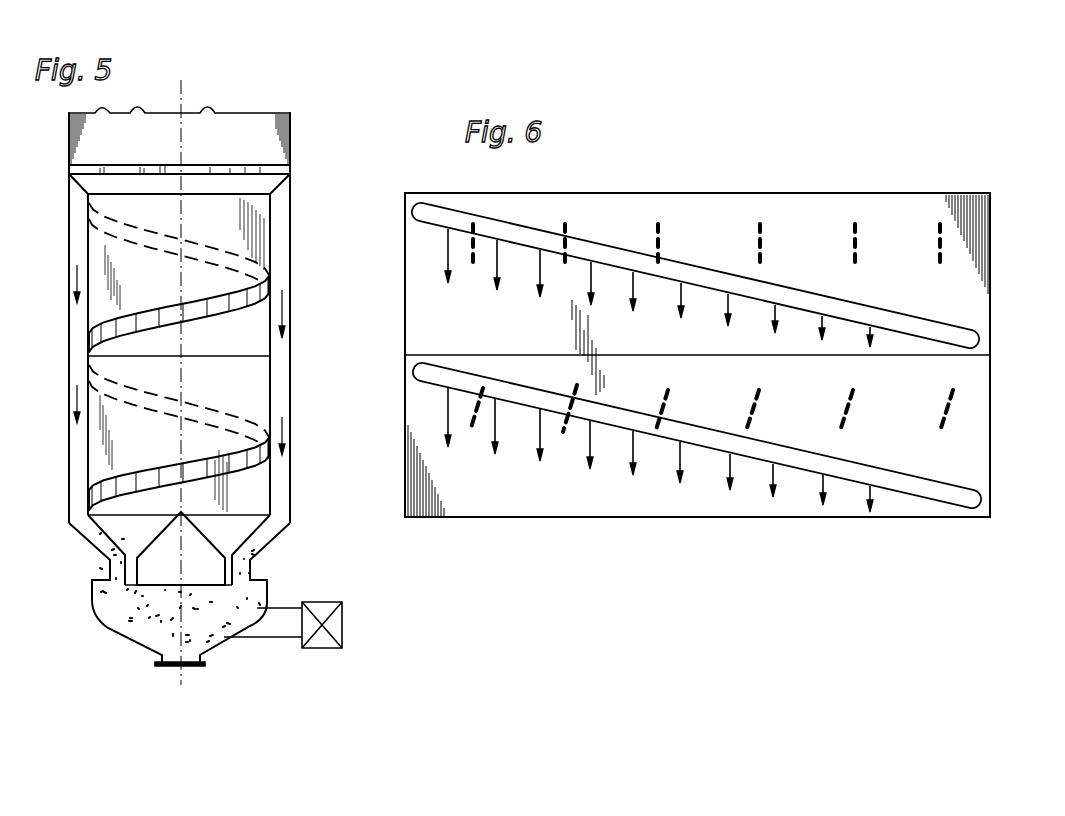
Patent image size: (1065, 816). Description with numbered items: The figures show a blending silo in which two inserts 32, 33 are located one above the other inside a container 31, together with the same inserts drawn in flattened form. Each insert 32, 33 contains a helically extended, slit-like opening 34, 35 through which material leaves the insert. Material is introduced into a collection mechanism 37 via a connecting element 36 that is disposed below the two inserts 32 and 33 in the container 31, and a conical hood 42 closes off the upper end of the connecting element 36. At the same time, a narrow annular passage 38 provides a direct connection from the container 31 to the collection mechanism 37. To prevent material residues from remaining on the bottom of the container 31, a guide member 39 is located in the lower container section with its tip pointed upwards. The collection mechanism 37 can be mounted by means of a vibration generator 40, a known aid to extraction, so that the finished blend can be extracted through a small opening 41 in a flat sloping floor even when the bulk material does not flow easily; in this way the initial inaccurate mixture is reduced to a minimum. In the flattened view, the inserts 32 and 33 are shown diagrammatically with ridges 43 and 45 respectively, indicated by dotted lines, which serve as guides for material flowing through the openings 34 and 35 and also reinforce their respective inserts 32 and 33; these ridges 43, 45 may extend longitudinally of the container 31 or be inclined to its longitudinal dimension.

In FIG. 5, the container 31 is at (228, 138).
In FIG. 5, the insert 32 is at (241, 228).
In FIG. 6, the insert 32 is at (425, 247).
In FIG. 5, the insert 33 is at (240, 395).
In FIG. 6, the insert 33 is at (415, 423).
In FIG. 5, the helically extended opening 34 is at (218, 303).
In FIG. 6, the helically extended opening 34 is at (668, 265).
In FIG. 5, the helically extended opening 35 is at (233, 461).
In FIG. 6, the helically extended opening 35 is at (740, 445).
In FIG. 5, the connecting element 36 is at (95, 542).
In FIG. 5, the collection mechanism 37 is at (145, 637).
In FIG. 5, the annular passage 38 is at (230, 577).
In FIG. 5, the guide member 39 is at (160, 571).
In FIG. 5, the vibration generator 40 is at (345, 622).
In FIG. 5, the opening 41 is at (182, 663).
In FIG. 5, the conical hood 42 is at (290, 182).
In FIG. 6, the ridges 43 is at (762, 240).
In FIG. 6, the ridges 45 is at (950, 410).